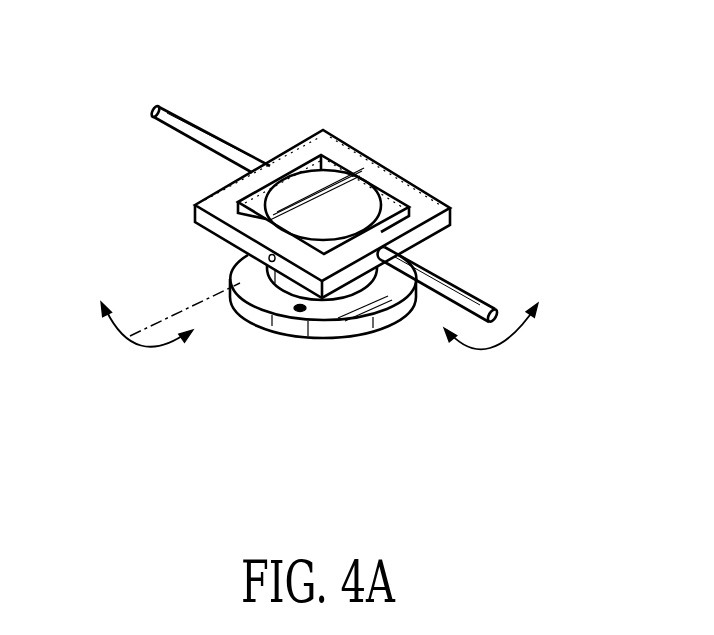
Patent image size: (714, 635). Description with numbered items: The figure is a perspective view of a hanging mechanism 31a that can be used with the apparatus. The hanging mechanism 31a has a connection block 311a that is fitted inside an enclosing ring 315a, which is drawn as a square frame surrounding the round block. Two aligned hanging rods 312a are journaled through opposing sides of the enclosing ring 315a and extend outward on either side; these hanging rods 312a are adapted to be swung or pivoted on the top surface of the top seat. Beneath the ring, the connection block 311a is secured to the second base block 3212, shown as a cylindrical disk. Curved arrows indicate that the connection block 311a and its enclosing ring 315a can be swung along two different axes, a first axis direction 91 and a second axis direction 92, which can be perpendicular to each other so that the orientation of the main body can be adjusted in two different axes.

The hanging mechanism 31a is at (402, 93).
The enclosing ring 315a is at (300, 143).
The connection block 311a is at (377, 164).
The hanging rods 312a is at (173, 129).
The second base block 3212 is at (383, 323).
The first axis direction 91 is at (170, 331).
The second axis direction 92 is at (491, 345).